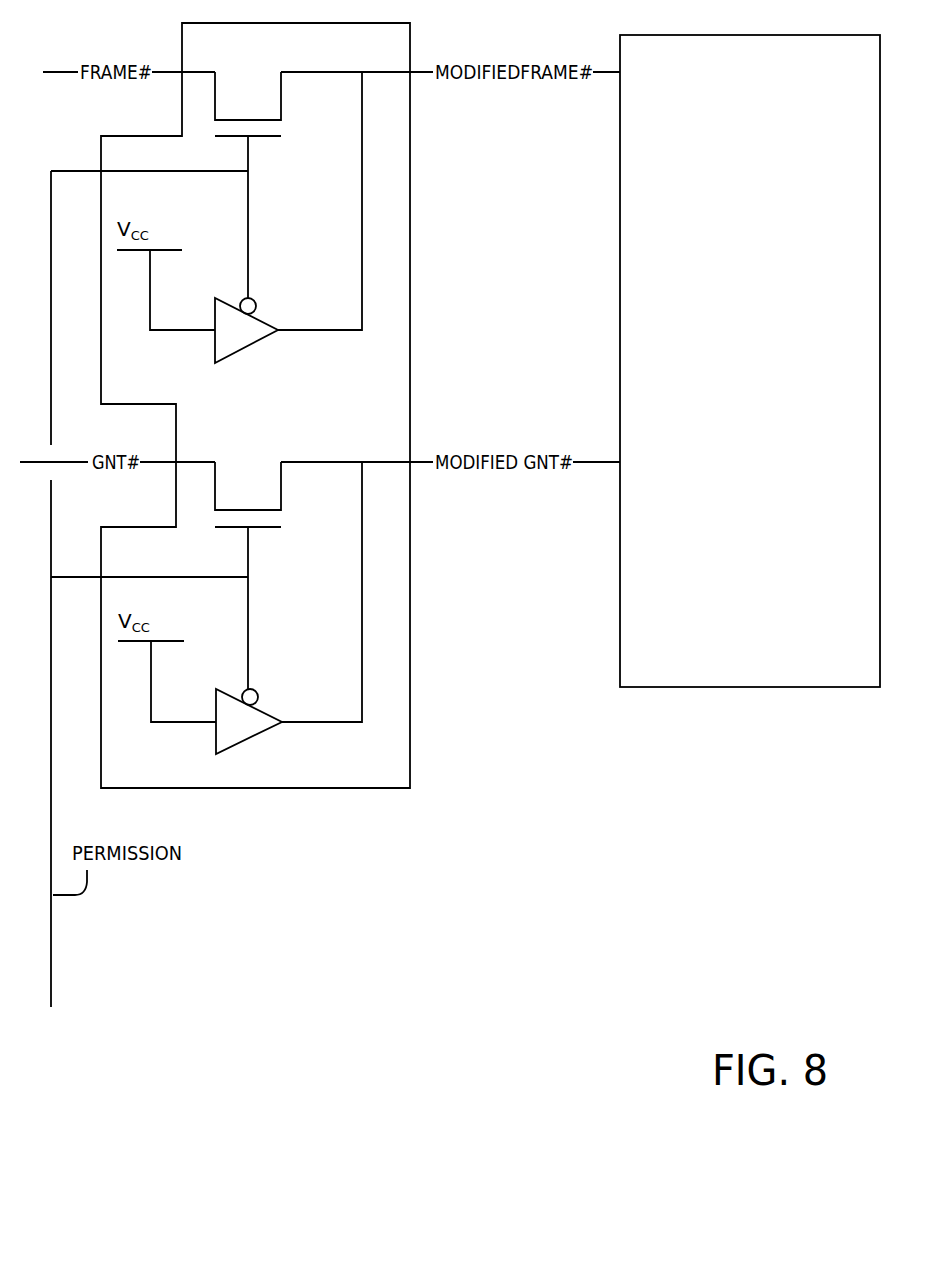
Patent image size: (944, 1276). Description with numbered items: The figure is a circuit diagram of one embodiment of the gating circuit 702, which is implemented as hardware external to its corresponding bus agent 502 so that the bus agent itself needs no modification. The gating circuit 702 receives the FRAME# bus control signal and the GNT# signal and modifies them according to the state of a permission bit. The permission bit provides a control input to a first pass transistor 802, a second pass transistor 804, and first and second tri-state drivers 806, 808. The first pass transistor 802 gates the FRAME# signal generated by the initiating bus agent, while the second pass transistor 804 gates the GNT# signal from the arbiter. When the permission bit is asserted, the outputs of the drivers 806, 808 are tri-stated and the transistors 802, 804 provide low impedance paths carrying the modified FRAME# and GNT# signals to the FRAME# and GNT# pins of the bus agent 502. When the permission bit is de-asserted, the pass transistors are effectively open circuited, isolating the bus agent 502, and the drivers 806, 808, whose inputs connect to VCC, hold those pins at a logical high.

The bus agent 502 is at (858, 655).
The gating circuit 702 is at (402, 781).
The first pass transistor 802 is at (281, 103).
The second pass transistor 804 is at (282, 492).
The first tri-state driver 806 is at (247, 352).
The second tri-state driver 808 is at (267, 710).